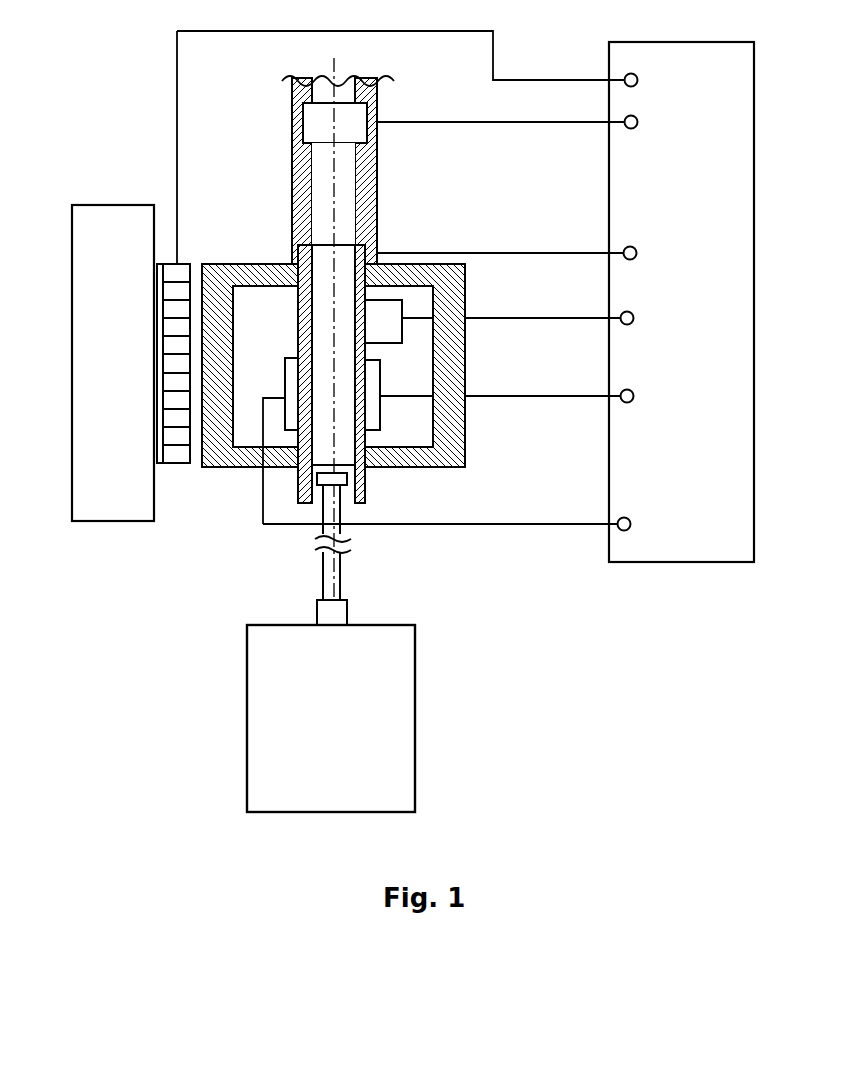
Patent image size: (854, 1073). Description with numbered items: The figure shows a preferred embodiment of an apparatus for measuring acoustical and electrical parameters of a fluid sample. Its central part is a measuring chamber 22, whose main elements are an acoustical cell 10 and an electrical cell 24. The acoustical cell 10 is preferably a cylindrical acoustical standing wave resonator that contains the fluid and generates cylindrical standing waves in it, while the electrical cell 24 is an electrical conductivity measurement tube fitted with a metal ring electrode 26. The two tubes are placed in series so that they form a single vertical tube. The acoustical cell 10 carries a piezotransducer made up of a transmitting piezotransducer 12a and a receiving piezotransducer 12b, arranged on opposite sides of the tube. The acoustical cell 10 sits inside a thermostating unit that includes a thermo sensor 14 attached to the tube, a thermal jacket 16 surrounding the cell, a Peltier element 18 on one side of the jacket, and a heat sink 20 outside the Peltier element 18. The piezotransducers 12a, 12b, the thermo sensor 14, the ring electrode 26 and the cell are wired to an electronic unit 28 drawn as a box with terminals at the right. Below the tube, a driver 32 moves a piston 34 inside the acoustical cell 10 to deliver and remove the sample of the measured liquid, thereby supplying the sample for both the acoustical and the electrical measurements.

The acoustical cell 10 is at (365, 466).
The transmitting piezotransducer 12a is at (285, 413).
The receiving piezotransducer 12b is at (372, 410).
The thermo sensor 14 is at (387, 317).
The thermal jacket 16 is at (427, 263).
The Peltier element 18 is at (178, 285).
The heat sink 20 is at (95, 345).
The measuring chamber 22 is at (317, 233).
The electrical cell 24 is at (377, 168).
The metal ring electrode 26 is at (365, 108).
The electronic unit 28 is at (708, 233).
The driver 32 is at (403, 700).
The piston 34 is at (320, 478).